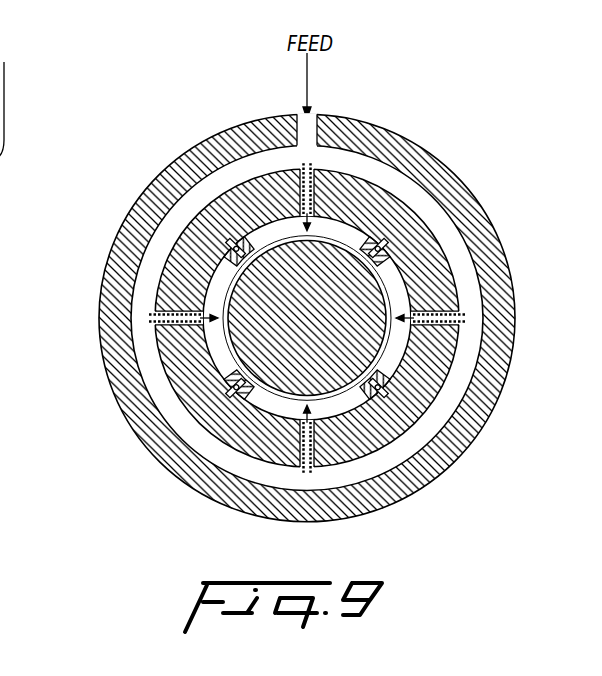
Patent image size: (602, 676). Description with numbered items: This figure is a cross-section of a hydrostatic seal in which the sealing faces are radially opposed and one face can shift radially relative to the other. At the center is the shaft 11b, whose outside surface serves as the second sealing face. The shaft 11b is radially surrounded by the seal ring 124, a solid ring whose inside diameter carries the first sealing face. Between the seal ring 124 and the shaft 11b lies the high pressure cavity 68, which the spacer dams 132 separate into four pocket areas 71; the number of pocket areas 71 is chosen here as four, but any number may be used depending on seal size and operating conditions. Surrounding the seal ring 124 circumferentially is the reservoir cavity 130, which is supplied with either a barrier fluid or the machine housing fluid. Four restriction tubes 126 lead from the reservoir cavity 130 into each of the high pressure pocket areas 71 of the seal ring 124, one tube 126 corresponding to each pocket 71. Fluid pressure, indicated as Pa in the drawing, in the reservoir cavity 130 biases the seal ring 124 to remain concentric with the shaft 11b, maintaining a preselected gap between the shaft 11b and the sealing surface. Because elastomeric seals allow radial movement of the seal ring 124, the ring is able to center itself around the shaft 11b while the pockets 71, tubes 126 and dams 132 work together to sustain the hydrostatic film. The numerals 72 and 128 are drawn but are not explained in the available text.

The shaft 11b is at (368, 296).
The high pressure cavity 68 is at (283, 400).
The pocket areas 71 is at (365, 190).
The journal surface 72 is at (262, 378).
The seal ring 124 is at (265, 190).
The restriction tubes 126 is at (325, 165).
The springs 128 is at (162, 290).
The reservoir cavity 130 is at (180, 423).
The spacer dams 132 is at (200, 223).
The pressure Pa is at (432, 217).